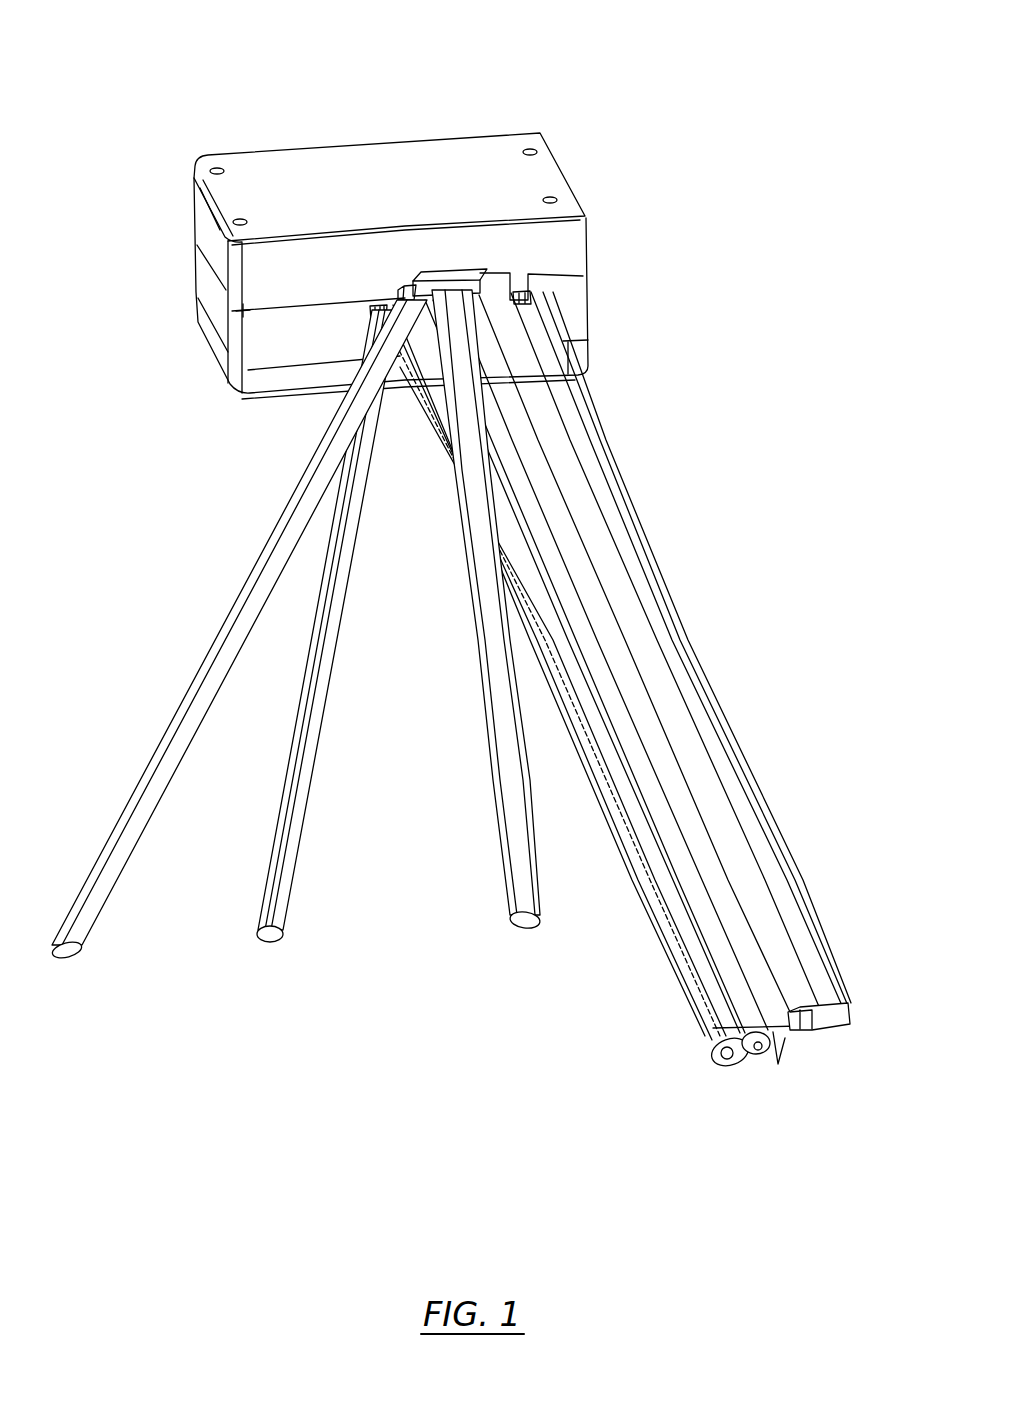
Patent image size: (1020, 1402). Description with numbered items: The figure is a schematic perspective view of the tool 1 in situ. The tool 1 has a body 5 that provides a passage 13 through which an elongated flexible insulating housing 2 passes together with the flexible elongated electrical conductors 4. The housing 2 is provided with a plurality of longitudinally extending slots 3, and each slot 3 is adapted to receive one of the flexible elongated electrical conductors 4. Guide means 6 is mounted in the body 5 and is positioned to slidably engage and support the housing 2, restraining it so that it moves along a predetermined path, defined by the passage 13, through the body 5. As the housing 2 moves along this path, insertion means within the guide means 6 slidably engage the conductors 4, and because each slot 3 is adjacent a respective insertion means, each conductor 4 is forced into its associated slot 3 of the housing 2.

The tool 1 is at (400, 204).
The elongated flexible insulating housing 2 is at (730, 618).
The longitudinally extending slots 3 is at (720, 1070).
The flexible elongated electrical conductor 4 is at (70, 960).
The body 5 is at (197, 285).
The guide means 6 is at (398, 281).
The passage 13 is at (446, 265).